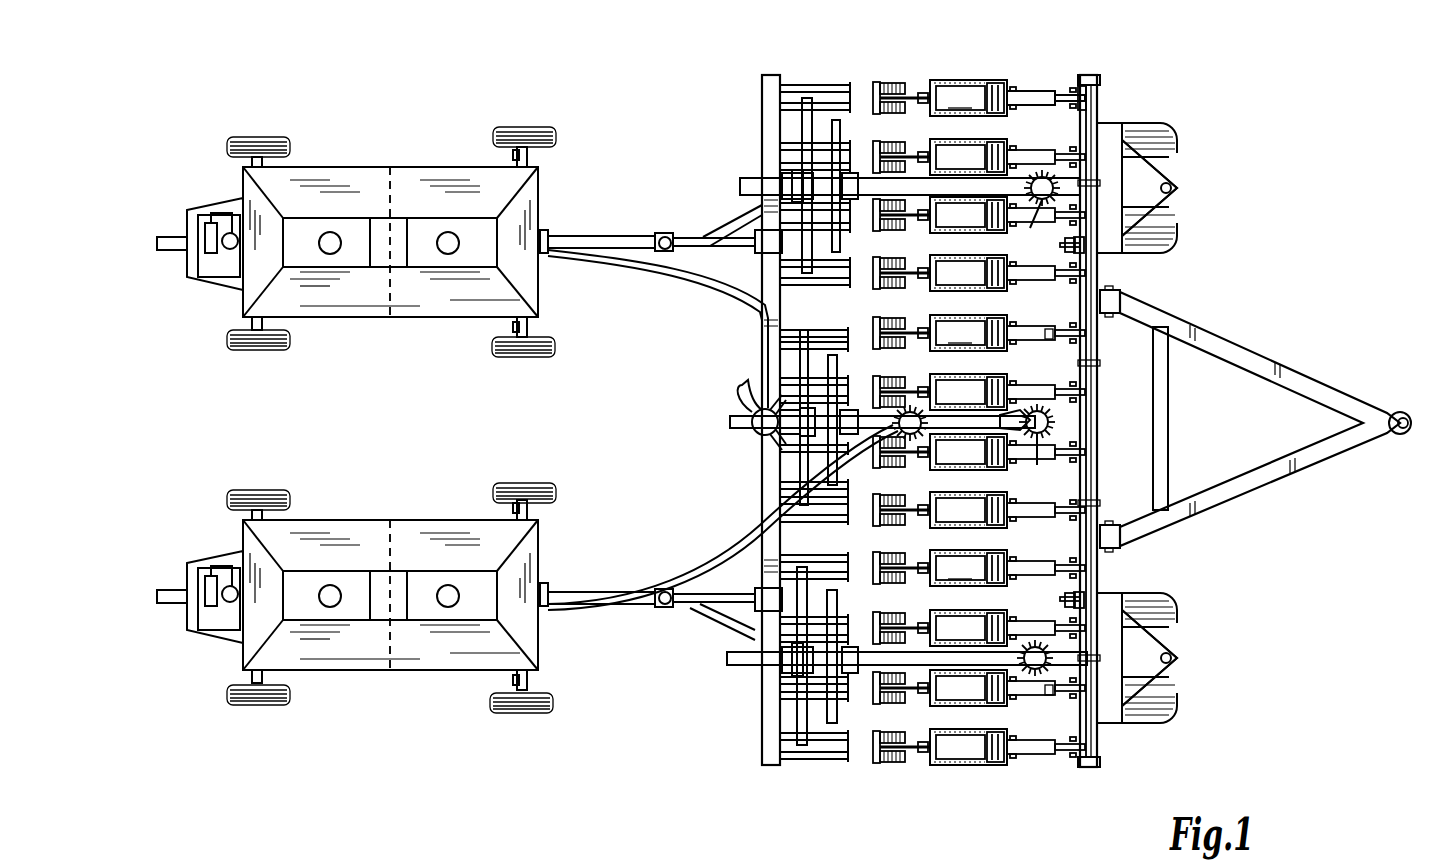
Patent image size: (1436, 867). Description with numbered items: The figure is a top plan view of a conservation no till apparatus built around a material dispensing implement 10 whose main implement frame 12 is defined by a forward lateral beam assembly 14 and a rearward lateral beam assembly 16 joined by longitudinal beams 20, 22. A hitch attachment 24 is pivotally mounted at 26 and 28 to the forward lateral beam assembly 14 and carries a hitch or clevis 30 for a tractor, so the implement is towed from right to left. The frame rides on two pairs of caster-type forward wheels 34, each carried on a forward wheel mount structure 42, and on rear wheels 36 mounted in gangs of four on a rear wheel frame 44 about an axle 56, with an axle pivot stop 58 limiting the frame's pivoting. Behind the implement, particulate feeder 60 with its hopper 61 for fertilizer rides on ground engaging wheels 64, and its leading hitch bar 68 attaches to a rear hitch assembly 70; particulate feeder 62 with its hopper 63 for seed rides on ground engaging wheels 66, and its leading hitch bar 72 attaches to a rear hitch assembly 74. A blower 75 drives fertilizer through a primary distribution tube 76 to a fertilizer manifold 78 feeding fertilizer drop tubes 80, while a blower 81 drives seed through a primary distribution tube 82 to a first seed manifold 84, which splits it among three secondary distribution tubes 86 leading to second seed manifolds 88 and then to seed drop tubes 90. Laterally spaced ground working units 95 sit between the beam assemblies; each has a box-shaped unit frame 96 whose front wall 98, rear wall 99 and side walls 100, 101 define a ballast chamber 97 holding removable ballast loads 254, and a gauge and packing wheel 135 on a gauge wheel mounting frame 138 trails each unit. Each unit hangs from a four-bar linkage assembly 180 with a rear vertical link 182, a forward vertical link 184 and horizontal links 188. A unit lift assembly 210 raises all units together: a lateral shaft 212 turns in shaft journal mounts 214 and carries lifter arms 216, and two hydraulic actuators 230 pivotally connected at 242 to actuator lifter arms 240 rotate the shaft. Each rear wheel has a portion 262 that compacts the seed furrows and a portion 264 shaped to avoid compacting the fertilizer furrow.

The material dispensing implement 10 is at (1272, 603).
The main implement frame 12 is at (1105, 430).
The forward lateral beam assembly 14 is at (1097, 740).
The rearward lateral beam assembly 16 is at (762, 680).
The longitudinal beam 20 is at (750, 425).
The longitudinal beam 22 is at (740, 185).
The hitch attachment 24 is at (1325, 458).
The pivot mounting 26 is at (1113, 548).
The pivot mounting 28 is at (1113, 290).
The hitch or clevis 30 is at (1393, 412).
The forward wheels 34 is at (1165, 138).
The rear wheels 36 is at (790, 105).
The forward wheel mount structure 42 is at (1175, 172).
The rear wheel frame 44 is at (822, 105).
The axle 56 is at (815, 560).
The axle pivot stop 58 is at (782, 655).
The particulate feeder 60 is at (408, 673).
The hopper 61 is at (393, 575).
The particulate feeder 62 is at (402, 320).
The hopper 63 is at (393, 223).
The ground engaging wheels 64 is at (227, 500).
The ground engaging wheels 66 is at (227, 147).
The leading hitch bar 68 is at (625, 606).
The rear hitch assembly 70 is at (688, 605).
The leading hitch bar 72 is at (650, 238).
The rear hitch assembly 74 is at (690, 236).
The blower 75 is at (210, 635).
The primary distribution tube 76 is at (598, 600).
The fertilizer manifold 78 is at (888, 455).
The fertilizer drop tubes 80 is at (979, 452).
The blower 81 is at (205, 280).
The primary distribution tube 82 is at (607, 252).
The first seed manifold 84 is at (752, 435).
The secondary distribution tubes 86 is at (778, 400).
The second seed manifold 88 is at (1040, 175).
The seed drop tubes 90 is at (1030, 340).
The ground working unit 95 is at (945, 78).
The unit frame 96 is at (984, 78).
The ballast chamber 97 is at (979, 329).
The front wall 98 is at (1014, 88).
The rear wall 99 is at (925, 90).
The side wall 100 is at (960, 80).
The side wall 101 is at (972, 119).
The gauge and packing wheel 135 is at (883, 82).
The gauge wheel mounting frame 138 is at (915, 82).
The four-bar linkage assembly 180 is at (1067, 62).
The rear vertical link 182 is at (1020, 105).
The forward vertical link 184 is at (1079, 88).
The horizontal link 188 is at (1040, 90).
The unit lift assembly 210 is at (1085, 250).
The lateral shaft 212 is at (1093, 108).
The shaft journal mounts 214 is at (1100, 80).
The lifter arms 216 is at (1050, 339).
The hydraulic actuators 230 is at (1065, 244).
The actuator lifter arm 240 is at (1070, 248).
The pivot connection 242 is at (1063, 596).
The removable ballast loads 254 is at (1000, 78).
The rear wheel portion 262 is at (850, 262).
The rear wheel portion 264 is at (850, 283).